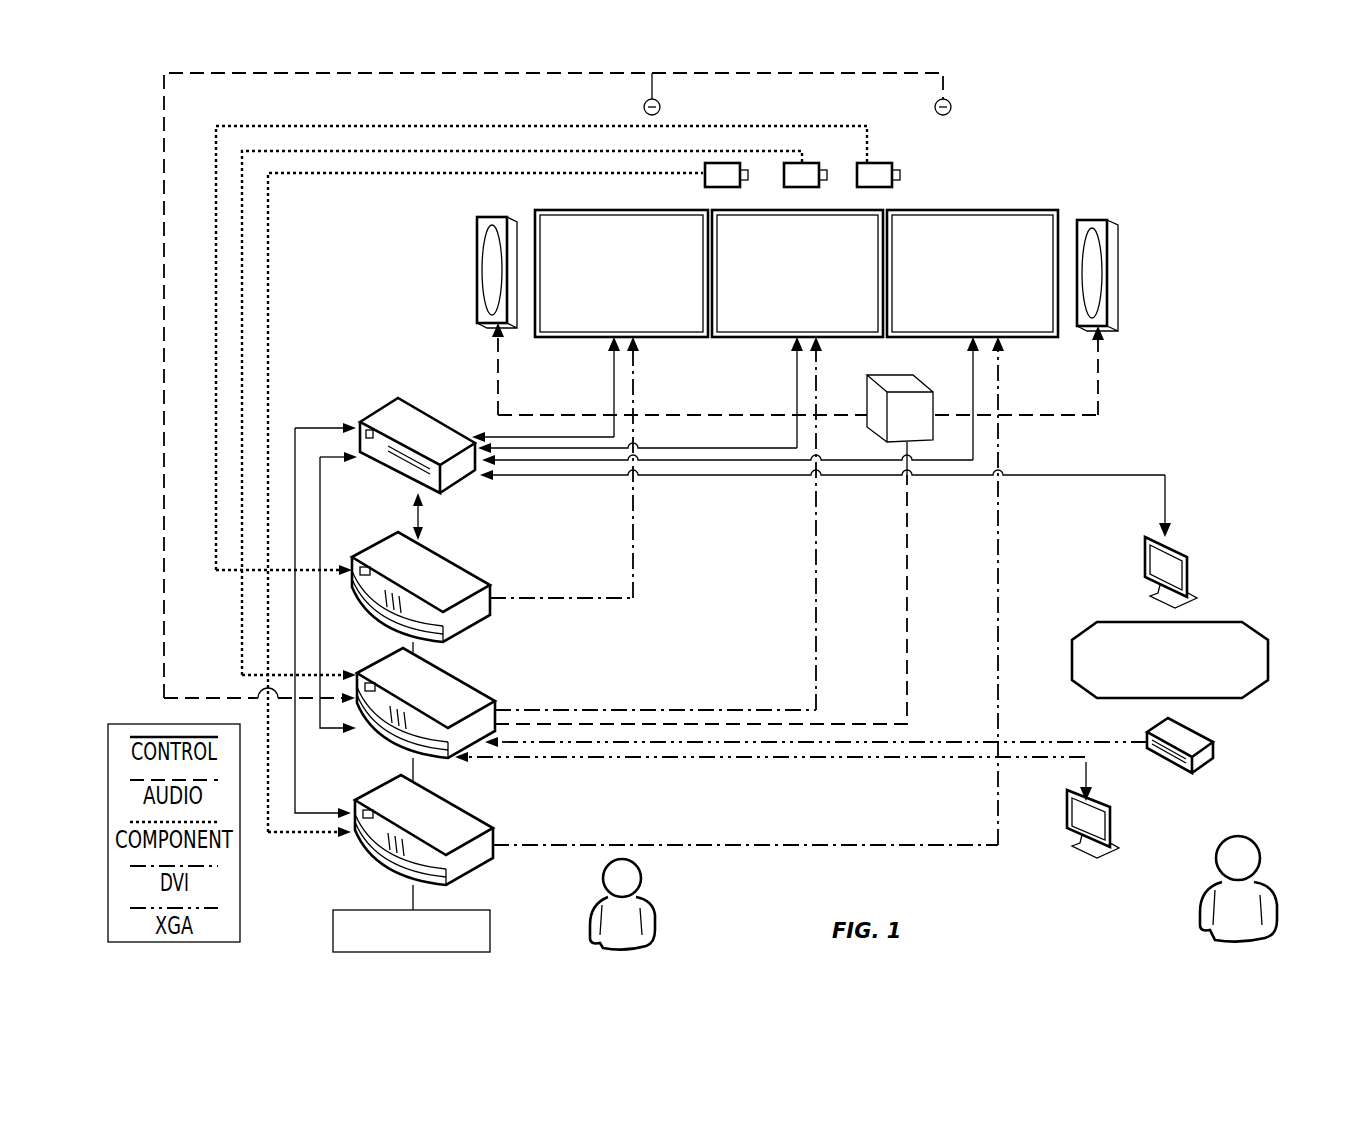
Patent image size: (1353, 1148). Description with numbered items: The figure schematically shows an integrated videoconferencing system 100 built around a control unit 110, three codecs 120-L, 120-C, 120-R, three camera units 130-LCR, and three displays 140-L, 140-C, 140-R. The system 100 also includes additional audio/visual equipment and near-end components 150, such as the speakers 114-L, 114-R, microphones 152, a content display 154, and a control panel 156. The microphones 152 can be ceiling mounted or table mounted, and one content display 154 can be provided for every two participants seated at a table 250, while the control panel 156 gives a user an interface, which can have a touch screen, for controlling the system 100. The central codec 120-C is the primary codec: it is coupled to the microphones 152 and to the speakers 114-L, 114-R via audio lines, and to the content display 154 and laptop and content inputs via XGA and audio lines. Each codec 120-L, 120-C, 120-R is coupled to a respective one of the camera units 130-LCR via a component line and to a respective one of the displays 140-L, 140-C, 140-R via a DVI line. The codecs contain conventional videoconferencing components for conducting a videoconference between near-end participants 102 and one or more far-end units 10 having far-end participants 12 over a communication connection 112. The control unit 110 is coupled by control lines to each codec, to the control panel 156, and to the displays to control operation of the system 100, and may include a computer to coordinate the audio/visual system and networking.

The integrated videoconferencing system 100 is at (1158, 132).
The microphones 152 is at (960, 100).
The camera units 130-LCR is at (905, 150).
The left speaker 114-L is at (477, 243).
The right speaker 114-R is at (1118, 250).
The left display 140-L is at (621, 404).
The center display 140-C is at (797, 460).
The right display 140-R is at (972, 527).
The control unit 110 is at (395, 402).
The left codec 120-L is at (482, 571).
The central codec 120-C is at (486, 690).
The right codec 120-R is at (483, 816).
The communication connection 112 is at (413, 896).
The far-end unit 10 is at (490, 935).
The near-end components 150 is at (1192, 475).
The control panel 156 is at (1183, 553).
The table 250 is at (1250, 622).
The content display 154 is at (1110, 800).
The near-end participants 102 is at (1218, 862).
The far-end participants 12 is at (655, 910).